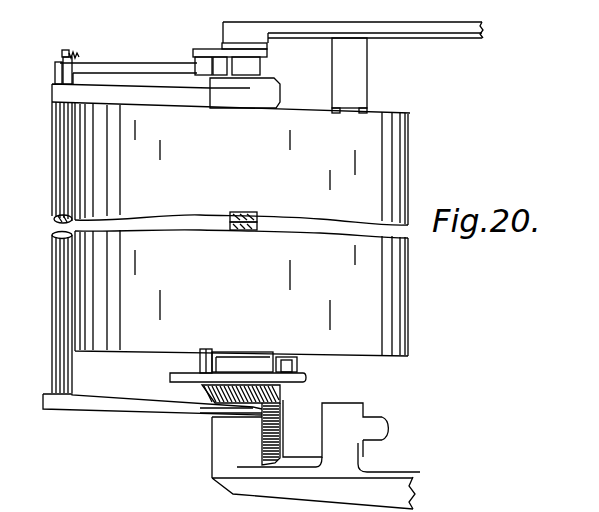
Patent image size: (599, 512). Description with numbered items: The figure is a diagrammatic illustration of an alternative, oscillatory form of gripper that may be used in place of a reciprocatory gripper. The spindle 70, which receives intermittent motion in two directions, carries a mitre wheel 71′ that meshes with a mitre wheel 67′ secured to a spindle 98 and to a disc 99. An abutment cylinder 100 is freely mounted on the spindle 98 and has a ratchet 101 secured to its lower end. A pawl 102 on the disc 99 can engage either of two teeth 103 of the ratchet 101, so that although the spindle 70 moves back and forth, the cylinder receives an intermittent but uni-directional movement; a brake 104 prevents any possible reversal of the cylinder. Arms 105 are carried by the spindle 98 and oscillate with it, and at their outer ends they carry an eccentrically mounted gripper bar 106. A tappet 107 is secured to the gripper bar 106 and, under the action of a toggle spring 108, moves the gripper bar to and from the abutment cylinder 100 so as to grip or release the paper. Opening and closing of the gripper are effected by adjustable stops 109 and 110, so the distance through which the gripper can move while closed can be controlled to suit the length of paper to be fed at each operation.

The abutment cylinder 100 is at (405, 322).
The arms 105 is at (173, 97).
The gripper bar 106 is at (65, 377).
The toggle spring 108 is at (79, 56).
The tappet 107 is at (158, 68).
The adjustable stop 110 is at (210, 60).
The spindle 98 is at (253, 66).
The adjustable stop 109 is at (203, 76).
The brake 104 is at (368, 110).
The teeth 103 is at (203, 347).
The ratchet 101 is at (246, 355).
The pawl 102 is at (286, 358).
The disc 99 is at (177, 384).
The mitre wheel 67′ is at (207, 398).
The mitre wheel 71′ is at (265, 445).
The spindle 70 is at (382, 423).